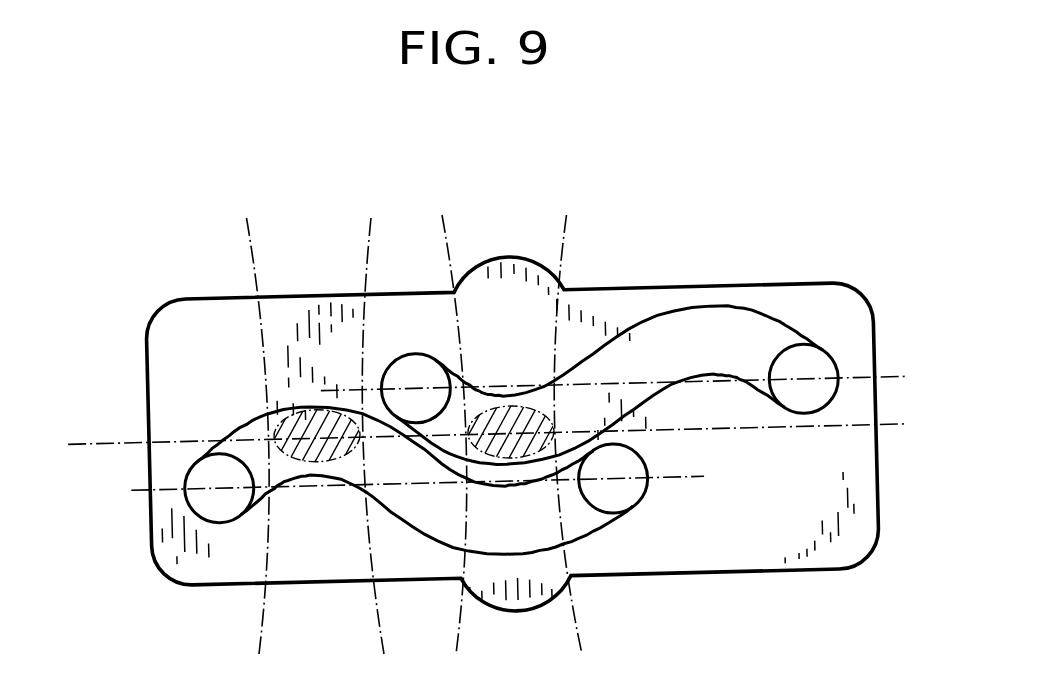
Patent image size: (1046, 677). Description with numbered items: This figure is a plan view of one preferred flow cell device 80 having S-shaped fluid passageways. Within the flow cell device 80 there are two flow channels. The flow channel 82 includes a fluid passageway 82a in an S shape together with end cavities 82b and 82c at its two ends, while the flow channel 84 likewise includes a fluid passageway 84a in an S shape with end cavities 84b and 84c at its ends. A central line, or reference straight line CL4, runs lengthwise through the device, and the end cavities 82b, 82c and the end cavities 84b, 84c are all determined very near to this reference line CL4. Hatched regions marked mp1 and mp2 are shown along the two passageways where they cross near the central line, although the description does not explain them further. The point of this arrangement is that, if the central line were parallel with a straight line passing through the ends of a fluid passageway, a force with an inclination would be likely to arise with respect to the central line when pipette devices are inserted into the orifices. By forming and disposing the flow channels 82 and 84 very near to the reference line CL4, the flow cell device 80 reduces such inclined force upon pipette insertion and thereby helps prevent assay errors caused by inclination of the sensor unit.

The flow cell device 80 is at (632, 226).
The flow channel 82 is at (404, 462).
The fluid passageway 82a is at (434, 519).
The end cavity 82b is at (226, 526).
The end cavity 82c is at (642, 498).
The flow channel 84 is at (608, 351).
The fluid passageway 84a is at (699, 316).
The end cavity 84b is at (411, 360).
The end cavity 84c is at (820, 408).
The first meshing position region mp1 is at (321, 470).
The second meshing position region mp2 is at (510, 408).
The reference straight line CL4 is at (93, 445).